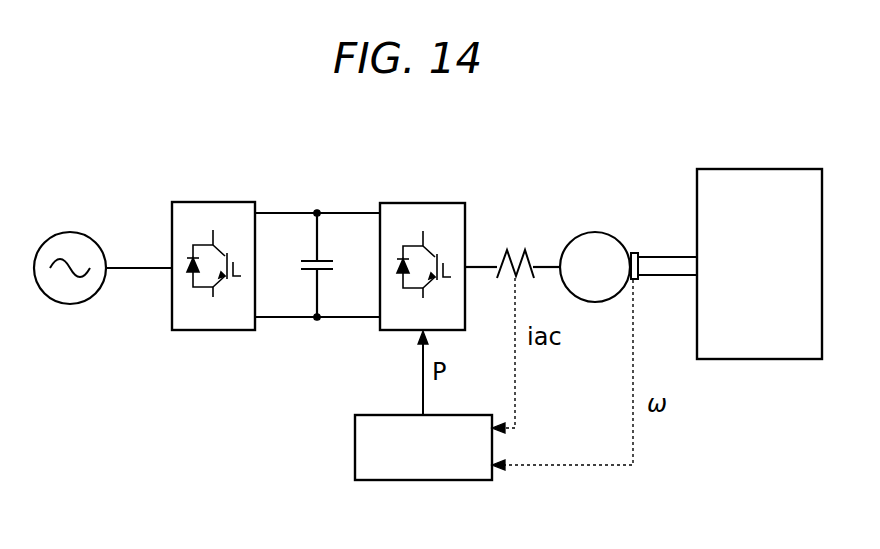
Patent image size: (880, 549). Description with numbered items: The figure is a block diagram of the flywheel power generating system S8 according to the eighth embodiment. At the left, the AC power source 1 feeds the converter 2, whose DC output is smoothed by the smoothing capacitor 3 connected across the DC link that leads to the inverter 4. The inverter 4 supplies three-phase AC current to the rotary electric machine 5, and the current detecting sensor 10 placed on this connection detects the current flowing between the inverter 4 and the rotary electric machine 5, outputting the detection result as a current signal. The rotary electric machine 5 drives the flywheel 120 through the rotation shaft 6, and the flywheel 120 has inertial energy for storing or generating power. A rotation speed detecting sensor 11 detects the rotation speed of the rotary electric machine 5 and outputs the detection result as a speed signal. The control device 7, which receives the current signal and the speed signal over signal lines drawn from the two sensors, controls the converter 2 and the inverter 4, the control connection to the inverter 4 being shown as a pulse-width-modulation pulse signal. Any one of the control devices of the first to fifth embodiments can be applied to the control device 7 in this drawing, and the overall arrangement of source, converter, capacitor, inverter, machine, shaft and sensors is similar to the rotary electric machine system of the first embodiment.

The AC power source 1 is at (62, 238).
The converter 2 is at (172, 202).
The smoothing capacitor 3 is at (308, 260).
The inverter 4 is at (400, 203).
The rotary electric machine 5 is at (586, 233).
The rotation shaft 6 is at (645, 277).
The control device 7 is at (355, 436).
The current detecting sensor 10 is at (522, 253).
The rotation speed detecting sensor 11 is at (640, 250).
The flywheel 120 is at (763, 169).
The flywheel power generating system S8 is at (228, 167).